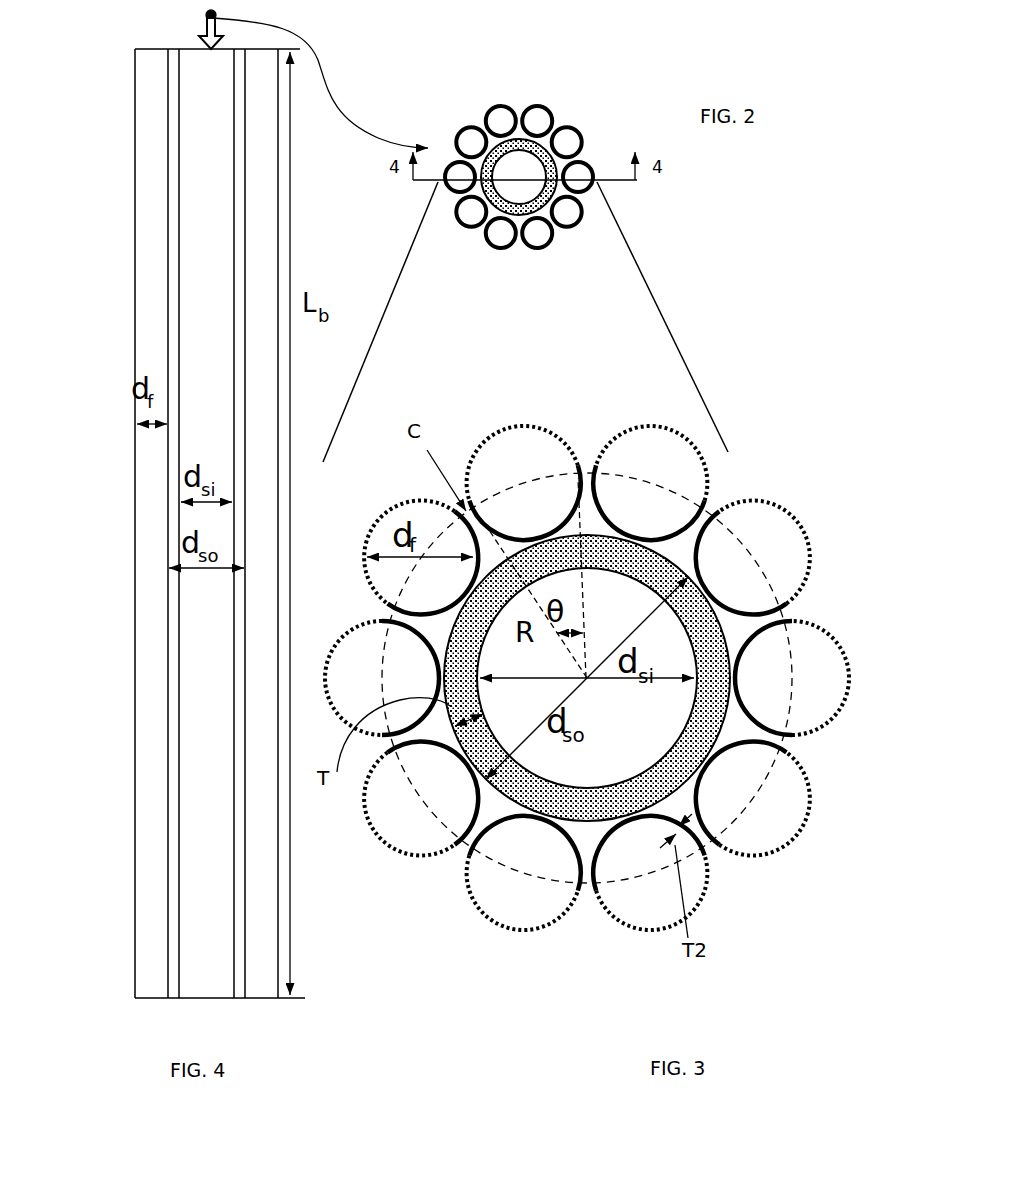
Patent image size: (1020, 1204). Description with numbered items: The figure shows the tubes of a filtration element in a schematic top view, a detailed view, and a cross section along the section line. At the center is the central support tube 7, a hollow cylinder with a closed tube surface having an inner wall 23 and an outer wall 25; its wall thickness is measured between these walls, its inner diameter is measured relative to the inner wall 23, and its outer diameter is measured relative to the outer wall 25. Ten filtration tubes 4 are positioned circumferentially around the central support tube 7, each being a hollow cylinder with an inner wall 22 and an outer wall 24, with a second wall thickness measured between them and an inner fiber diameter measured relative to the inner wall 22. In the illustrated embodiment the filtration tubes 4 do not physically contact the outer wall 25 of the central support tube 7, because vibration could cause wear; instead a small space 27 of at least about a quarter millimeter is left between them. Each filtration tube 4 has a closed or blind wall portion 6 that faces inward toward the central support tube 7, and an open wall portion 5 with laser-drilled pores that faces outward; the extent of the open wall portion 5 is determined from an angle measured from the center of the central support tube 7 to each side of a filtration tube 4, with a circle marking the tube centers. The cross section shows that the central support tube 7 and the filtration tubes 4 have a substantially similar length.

In FIG. 2, the filtration tube 4 is at (573, 182).
In FIG. 3, the filtration tube 4 is at (567, 56).
In FIG. 4, the filtration tube 4 is at (257, 313).
In FIG. 3, the open wall portion 5 is at (837, 710).
In FIG. 3, the closed wall portion 6 is at (445, 753).
In FIG. 2, the central support tube 7 is at (537, 197).
In FIG. 3, the central support tube 7 is at (531, 354).
In FIG. 4, the central support tube 7 is at (216, 237).
In FIG. 3, the inner wall 22 is at (607, 852).
In FIG. 3, the inner wall 23 is at (658, 753).
In FIG. 3, the outer wall 24 is at (593, 840).
In FIG. 3, the outer wall 25 is at (680, 556).
In FIG. 3, the small space 27 is at (734, 653).